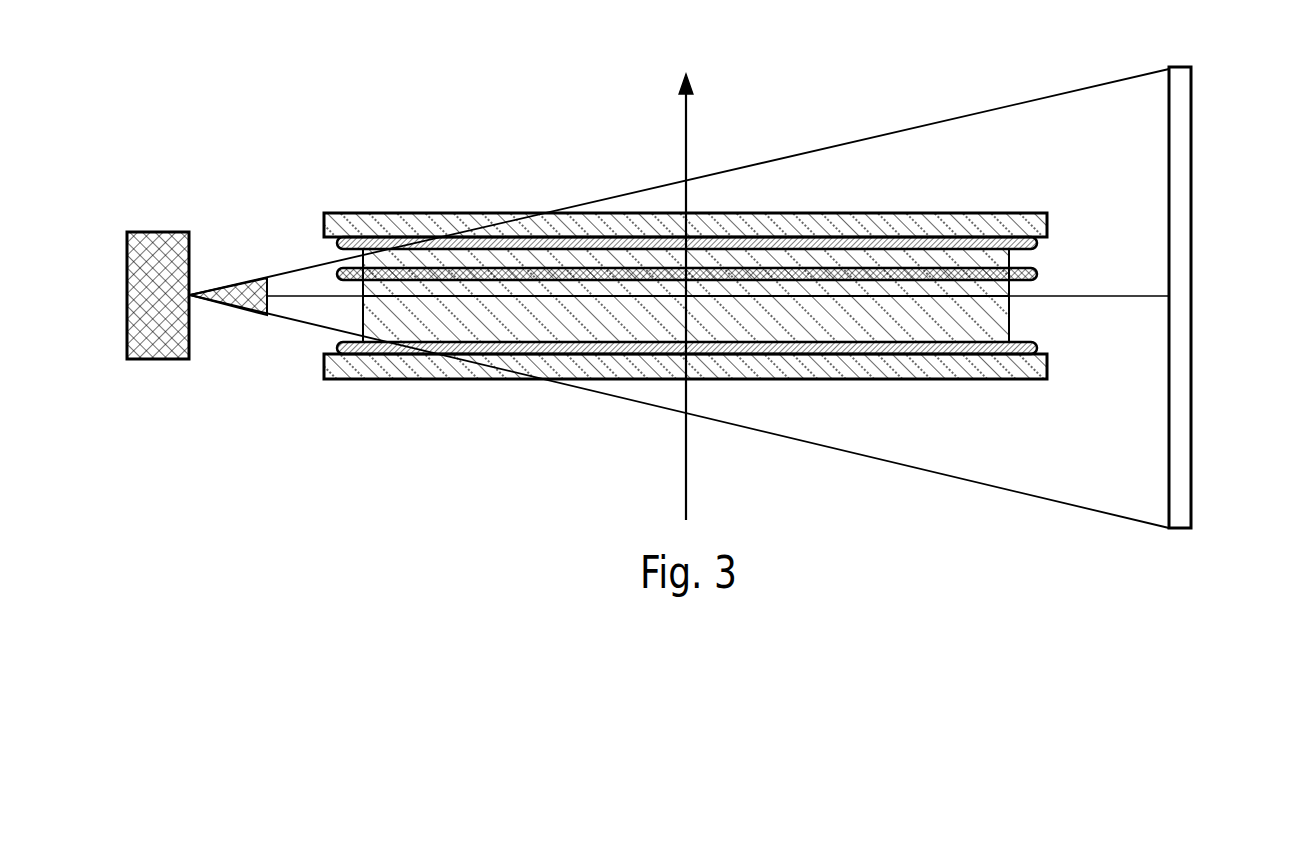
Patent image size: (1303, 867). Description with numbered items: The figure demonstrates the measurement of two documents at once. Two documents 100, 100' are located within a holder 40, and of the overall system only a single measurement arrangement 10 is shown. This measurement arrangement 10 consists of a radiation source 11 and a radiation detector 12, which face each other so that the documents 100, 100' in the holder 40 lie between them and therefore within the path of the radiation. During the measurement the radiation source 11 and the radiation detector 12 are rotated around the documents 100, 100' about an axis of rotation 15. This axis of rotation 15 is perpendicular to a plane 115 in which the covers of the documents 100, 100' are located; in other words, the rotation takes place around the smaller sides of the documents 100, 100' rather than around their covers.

The measurement arrangement 10 is at (276, 130).
The radiation source 11 is at (158, 362).
The radiation detector 12 is at (1193, 152).
The axis of rotation 15 is at (685, 142).
The holder 40 is at (432, 380).
The document 100 is at (749, 243).
The document 100' is at (753, 345).
The plane 115 is at (332, 243).